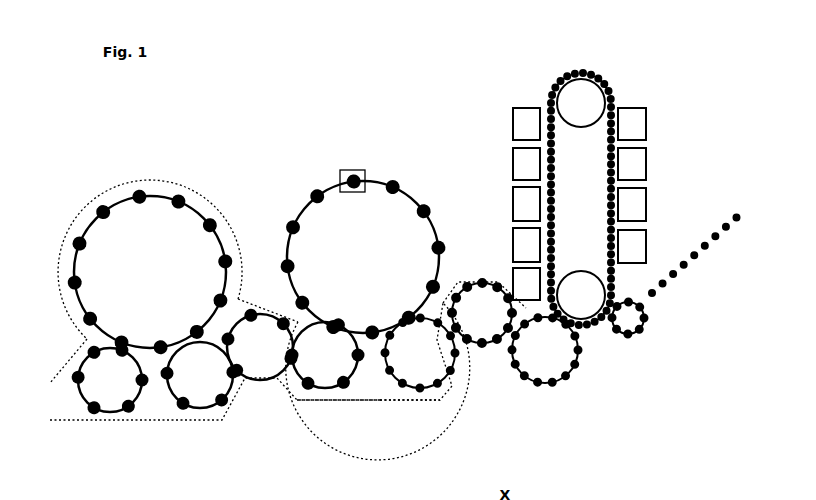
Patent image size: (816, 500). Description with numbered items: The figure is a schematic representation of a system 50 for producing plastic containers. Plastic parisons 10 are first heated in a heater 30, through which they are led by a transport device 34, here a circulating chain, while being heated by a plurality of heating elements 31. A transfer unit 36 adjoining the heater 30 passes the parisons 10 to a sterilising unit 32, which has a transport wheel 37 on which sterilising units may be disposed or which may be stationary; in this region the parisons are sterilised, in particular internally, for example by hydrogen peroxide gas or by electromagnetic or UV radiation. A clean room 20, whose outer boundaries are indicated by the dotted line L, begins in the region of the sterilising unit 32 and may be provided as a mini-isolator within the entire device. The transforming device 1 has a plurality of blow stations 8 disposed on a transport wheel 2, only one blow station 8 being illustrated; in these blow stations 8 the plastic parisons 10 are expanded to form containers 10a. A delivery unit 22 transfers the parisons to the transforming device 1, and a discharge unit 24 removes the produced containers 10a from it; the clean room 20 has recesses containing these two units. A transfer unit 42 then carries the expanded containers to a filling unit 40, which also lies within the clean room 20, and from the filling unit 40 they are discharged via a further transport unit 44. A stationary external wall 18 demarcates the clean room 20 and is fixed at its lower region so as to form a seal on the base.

The transforming device 1 is at (347, 158).
The system 50 is at (284, 80).
The filling unit 40 is at (123, 220).
The further transport unit 44 is at (95, 385).
The transfer unit 42 is at (220, 375).
The discharge unit 24 is at (318, 385).
The clean room 20 is at (298, 170).
The transport wheel 2 is at (410, 233).
The wall 18 is at (410, 178).
The blow station 8 is at (362, 175).
The dotted line L is at (373, 400).
The containers 10a is at (353, 402).
The delivery unit 22 is at (440, 362).
The sterilising unit 32 is at (478, 260).
The transport wheel 37 is at (480, 338).
The transfer unit 36 is at (537, 358).
The heater 30 is at (537, 77).
The transport device 34 is at (583, 97).
The heating elements 31 is at (523, 127).
The plastic parisons 10 is at (580, 355).